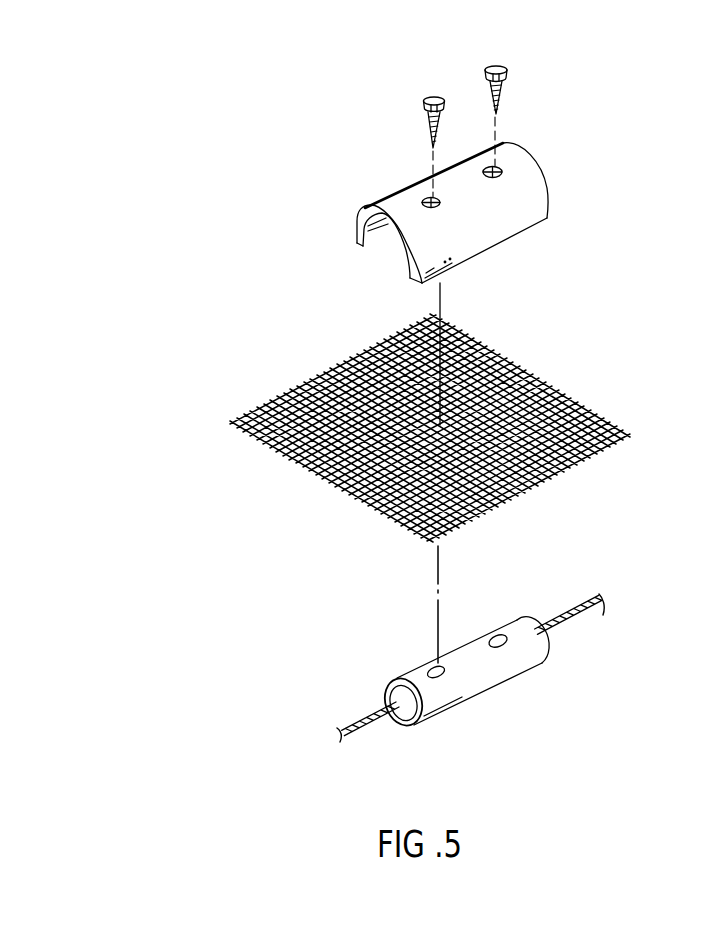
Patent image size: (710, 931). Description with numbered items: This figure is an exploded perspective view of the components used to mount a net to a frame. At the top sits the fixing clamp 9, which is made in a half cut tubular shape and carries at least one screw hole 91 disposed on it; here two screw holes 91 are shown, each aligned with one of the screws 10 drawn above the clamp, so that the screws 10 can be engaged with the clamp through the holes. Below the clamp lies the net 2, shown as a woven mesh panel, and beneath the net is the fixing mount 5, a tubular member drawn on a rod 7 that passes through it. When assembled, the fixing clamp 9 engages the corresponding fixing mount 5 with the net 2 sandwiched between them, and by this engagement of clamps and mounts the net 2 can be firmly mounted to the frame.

The net 2 is at (570, 397).
The fixing mount 5 is at (500, 673).
The rod 7 is at (577, 607).
The fixing clamp 9 is at (483, 232).
The screw hole 91 is at (498, 173).
The screw 10 is at (433, 96).